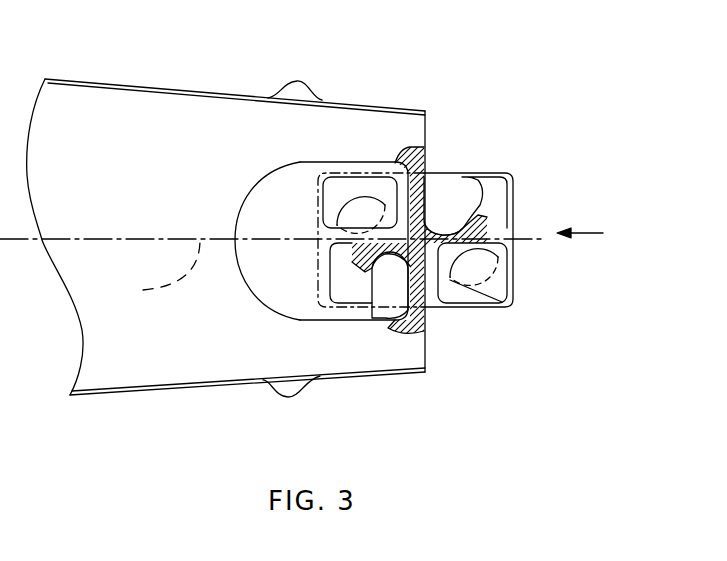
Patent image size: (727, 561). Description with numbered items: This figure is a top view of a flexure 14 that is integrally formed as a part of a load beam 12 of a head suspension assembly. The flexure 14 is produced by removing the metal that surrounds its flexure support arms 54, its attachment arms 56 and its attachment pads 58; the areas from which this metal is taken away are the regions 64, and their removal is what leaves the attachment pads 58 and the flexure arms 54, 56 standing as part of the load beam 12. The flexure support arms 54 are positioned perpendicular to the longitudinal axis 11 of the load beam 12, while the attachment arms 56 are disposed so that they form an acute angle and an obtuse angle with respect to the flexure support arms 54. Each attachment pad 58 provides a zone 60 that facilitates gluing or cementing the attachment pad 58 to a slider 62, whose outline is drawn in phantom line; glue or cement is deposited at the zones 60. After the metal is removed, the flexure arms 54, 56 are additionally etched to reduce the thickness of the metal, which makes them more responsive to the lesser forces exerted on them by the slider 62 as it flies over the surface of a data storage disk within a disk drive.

The longitudinal axis 11 is at (159, 272).
The load beam 12 is at (237, 122).
The flexure 14 is at (633, 240).
The flexure support arms 54 is at (447, 195).
The attachment arms 56 is at (500, 177).
The attachment pads 58 is at (337, 247).
The zone 60 is at (350, 203).
The slider 62 is at (517, 293).
The regions 64 is at (328, 163).